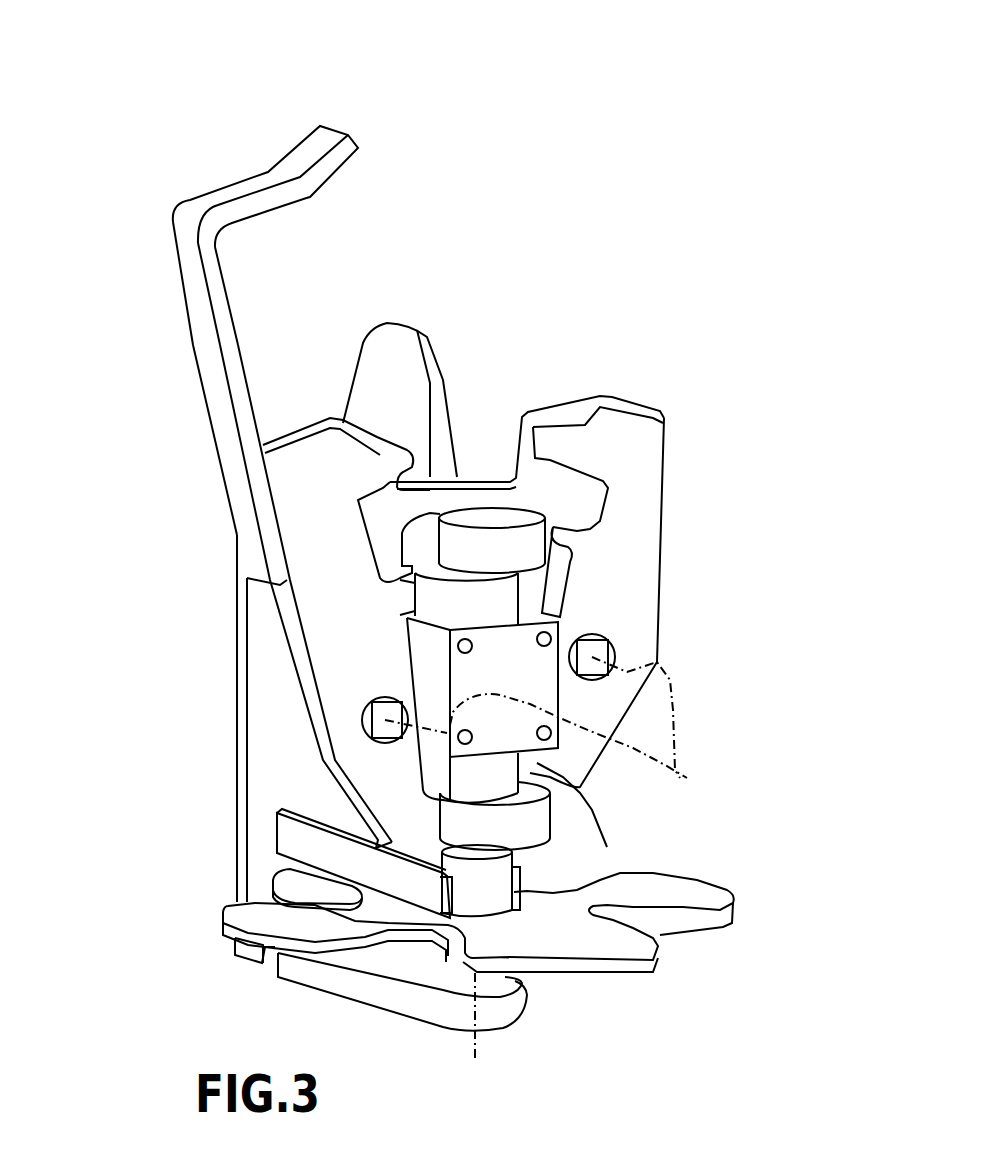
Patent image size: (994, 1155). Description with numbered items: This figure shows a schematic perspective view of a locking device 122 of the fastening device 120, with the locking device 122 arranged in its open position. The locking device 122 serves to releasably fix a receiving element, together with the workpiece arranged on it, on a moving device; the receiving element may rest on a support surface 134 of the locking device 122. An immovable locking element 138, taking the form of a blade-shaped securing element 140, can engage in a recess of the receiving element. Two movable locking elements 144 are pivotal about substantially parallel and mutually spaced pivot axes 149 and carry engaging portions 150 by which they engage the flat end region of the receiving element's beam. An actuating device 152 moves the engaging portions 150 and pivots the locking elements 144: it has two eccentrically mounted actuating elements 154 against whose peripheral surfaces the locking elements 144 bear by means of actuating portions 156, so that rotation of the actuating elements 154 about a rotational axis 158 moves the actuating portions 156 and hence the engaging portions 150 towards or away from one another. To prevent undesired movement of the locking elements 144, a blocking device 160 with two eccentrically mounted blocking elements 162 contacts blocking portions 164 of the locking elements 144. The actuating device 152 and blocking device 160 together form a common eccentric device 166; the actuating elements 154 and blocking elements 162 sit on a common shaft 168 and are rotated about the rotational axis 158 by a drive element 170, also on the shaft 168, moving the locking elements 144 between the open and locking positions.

The fastening device 120 is at (550, 150).
The locking device 122 is at (567, 237).
The support surface 134 is at (463, 483).
The locking element 138 is at (187, 242).
The securing element 140 is at (255, 188).
The movable locking elements 144 is at (192, 227).
The pivot axes 149 is at (682, 779).
The engaging portions 150 is at (570, 452).
The actuating device 152 is at (585, 372).
The actuating elements 154 is at (503, 565).
The actuating portions 156 is at (557, 537).
The rotational axis 158 is at (477, 1043).
The blocking device 160 is at (415, 810).
The blocking elements 162 is at (463, 771).
The blocking portions 164 is at (530, 832).
The eccentric device 166 is at (548, 561).
The common shaft 168 is at (507, 980).
The drive element 170 is at (677, 903).